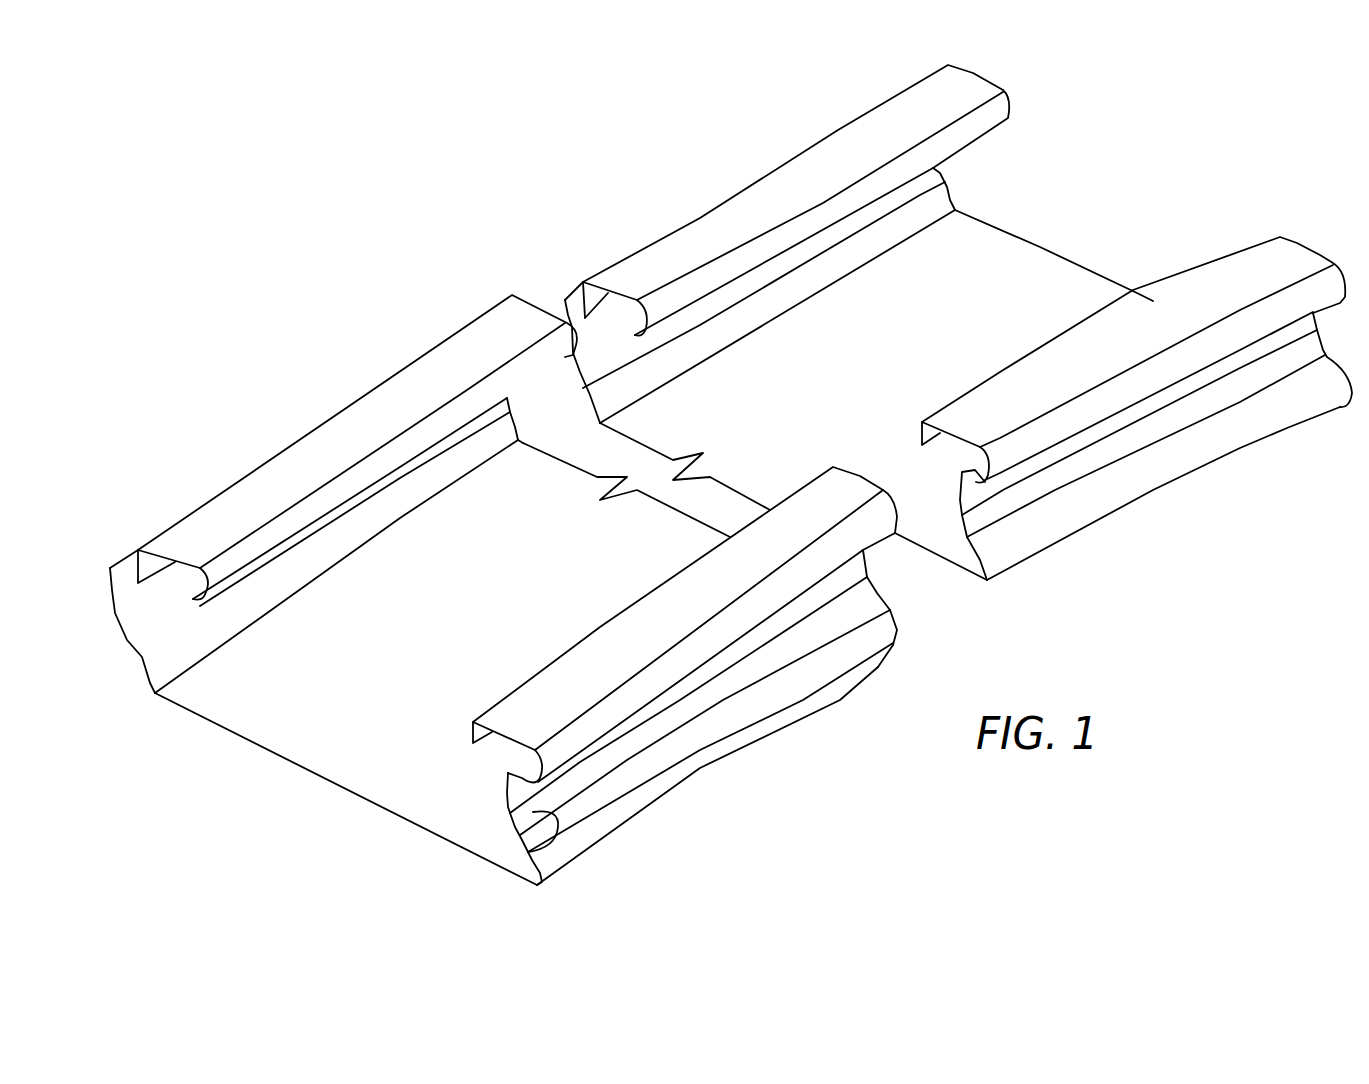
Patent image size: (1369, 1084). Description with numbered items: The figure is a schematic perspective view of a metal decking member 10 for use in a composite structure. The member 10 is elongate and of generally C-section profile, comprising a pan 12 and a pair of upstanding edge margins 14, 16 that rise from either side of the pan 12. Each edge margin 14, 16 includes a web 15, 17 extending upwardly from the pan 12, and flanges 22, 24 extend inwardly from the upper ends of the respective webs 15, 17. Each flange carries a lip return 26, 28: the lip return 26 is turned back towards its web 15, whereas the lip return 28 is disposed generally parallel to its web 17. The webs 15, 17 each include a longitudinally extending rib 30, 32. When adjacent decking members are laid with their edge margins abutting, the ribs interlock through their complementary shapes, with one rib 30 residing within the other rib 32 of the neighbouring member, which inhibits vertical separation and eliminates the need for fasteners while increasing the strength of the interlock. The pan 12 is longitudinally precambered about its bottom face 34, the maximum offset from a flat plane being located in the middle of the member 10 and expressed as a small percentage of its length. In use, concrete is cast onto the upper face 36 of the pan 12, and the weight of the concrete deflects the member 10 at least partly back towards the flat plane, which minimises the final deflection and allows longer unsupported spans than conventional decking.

The metal decking member 10 is at (707, 499).
The pan 12 is at (384, 766).
The upstanding edge margin 14 is at (320, 523).
The web 15 is at (768, 662).
The upstanding edge margin 16 is at (712, 700).
The web 17 is at (112, 567).
The flange 22 is at (335, 445).
The flange 24 is at (573, 663).
The lip return 26 is at (330, 500).
The lip return 28 is at (467, 732).
The longitudinally extending rib 30 is at (135, 617).
The longitudinally extending rib 32 is at (537, 848).
The bottom face 34 is at (304, 774).
The upper face 36 is at (368, 673).